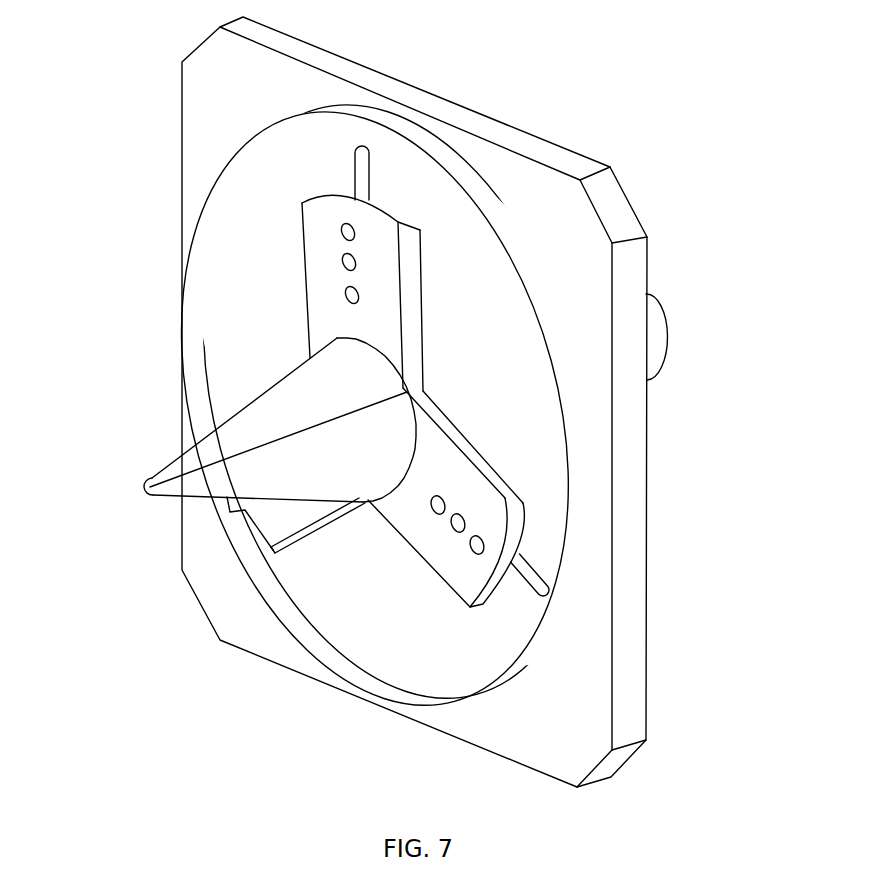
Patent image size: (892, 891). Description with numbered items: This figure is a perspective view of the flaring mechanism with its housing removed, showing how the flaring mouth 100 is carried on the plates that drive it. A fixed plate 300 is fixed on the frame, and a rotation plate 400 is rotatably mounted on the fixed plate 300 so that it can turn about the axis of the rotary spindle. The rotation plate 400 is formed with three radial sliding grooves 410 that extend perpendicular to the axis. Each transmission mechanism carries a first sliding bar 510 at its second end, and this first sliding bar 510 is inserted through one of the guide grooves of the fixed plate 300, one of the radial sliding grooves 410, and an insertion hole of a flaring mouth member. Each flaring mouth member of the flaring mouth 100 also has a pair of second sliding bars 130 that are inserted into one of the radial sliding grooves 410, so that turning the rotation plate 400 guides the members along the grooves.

The flaring mouth 100 is at (326, 312).
The second sliding bars 130 is at (359, 294).
The fixed plate 300 is at (220, 604).
The rotation plate 400 is at (365, 642).
The radial sliding grooves 410 is at (358, 146).
The first sliding bar 510 is at (356, 264).